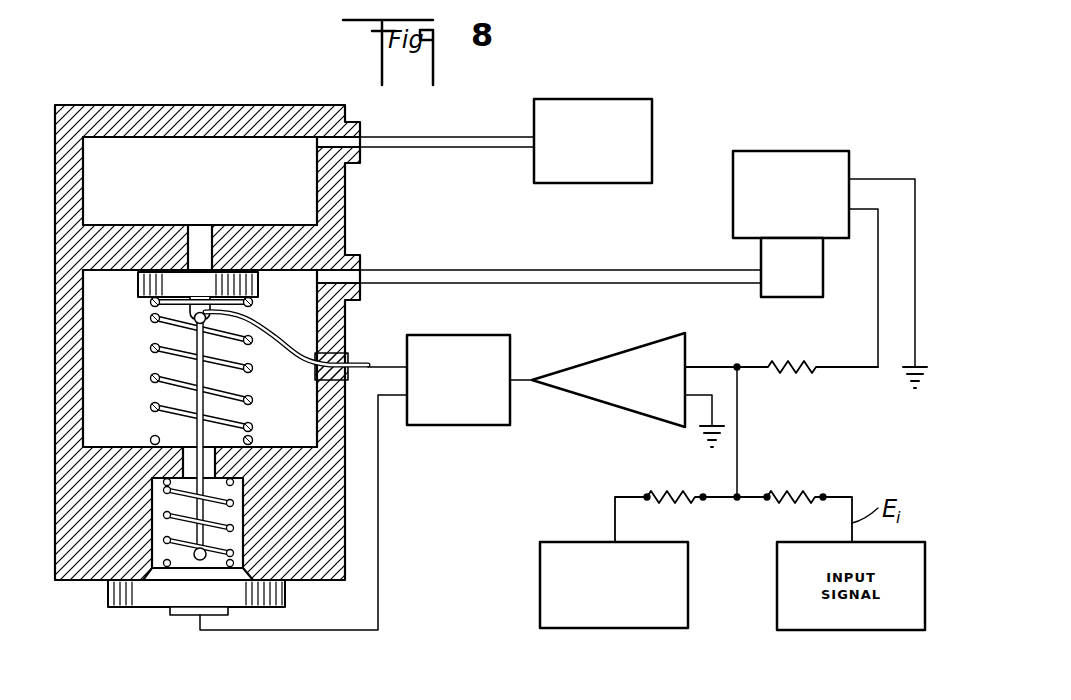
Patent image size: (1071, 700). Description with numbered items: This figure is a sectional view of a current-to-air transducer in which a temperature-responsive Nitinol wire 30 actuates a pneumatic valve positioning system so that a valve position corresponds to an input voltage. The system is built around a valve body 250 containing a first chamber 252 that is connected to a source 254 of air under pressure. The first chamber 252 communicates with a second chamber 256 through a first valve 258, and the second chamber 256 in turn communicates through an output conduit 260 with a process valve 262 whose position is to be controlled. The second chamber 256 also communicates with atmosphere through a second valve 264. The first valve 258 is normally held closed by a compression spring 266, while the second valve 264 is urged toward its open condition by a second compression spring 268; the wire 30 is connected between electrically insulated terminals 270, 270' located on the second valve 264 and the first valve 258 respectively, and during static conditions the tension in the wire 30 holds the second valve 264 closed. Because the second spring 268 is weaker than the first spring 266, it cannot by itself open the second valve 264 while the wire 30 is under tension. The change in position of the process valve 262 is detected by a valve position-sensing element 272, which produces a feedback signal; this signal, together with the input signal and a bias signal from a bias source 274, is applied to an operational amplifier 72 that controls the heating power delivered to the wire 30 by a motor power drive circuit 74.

The valve body 250 is at (147, 108).
The first chamber 252 is at (217, 183).
The source of air under pressure 254 is at (597, 99).
The second chamber 256 is at (130, 376).
The first valve 258 is at (165, 290).
The output conduit 260 is at (540, 268).
The process valve 262 is at (787, 297).
The second valve 264 is at (122, 592).
The compression spring 266 is at (150, 437).
The second compression spring 268 is at (232, 522).
The electrically insulated terminal 270 is at (148, 546).
The electrically insulated terminal 270' is at (149, 432).
The valve position-sensing element 272 is at (795, 151).
The bias source 274 is at (568, 542).
The temperature-responsive wire 30 is at (242, 372).
The operational amplifier 72 is at (648, 343).
The motor power drive circuit 74 is at (467, 335).